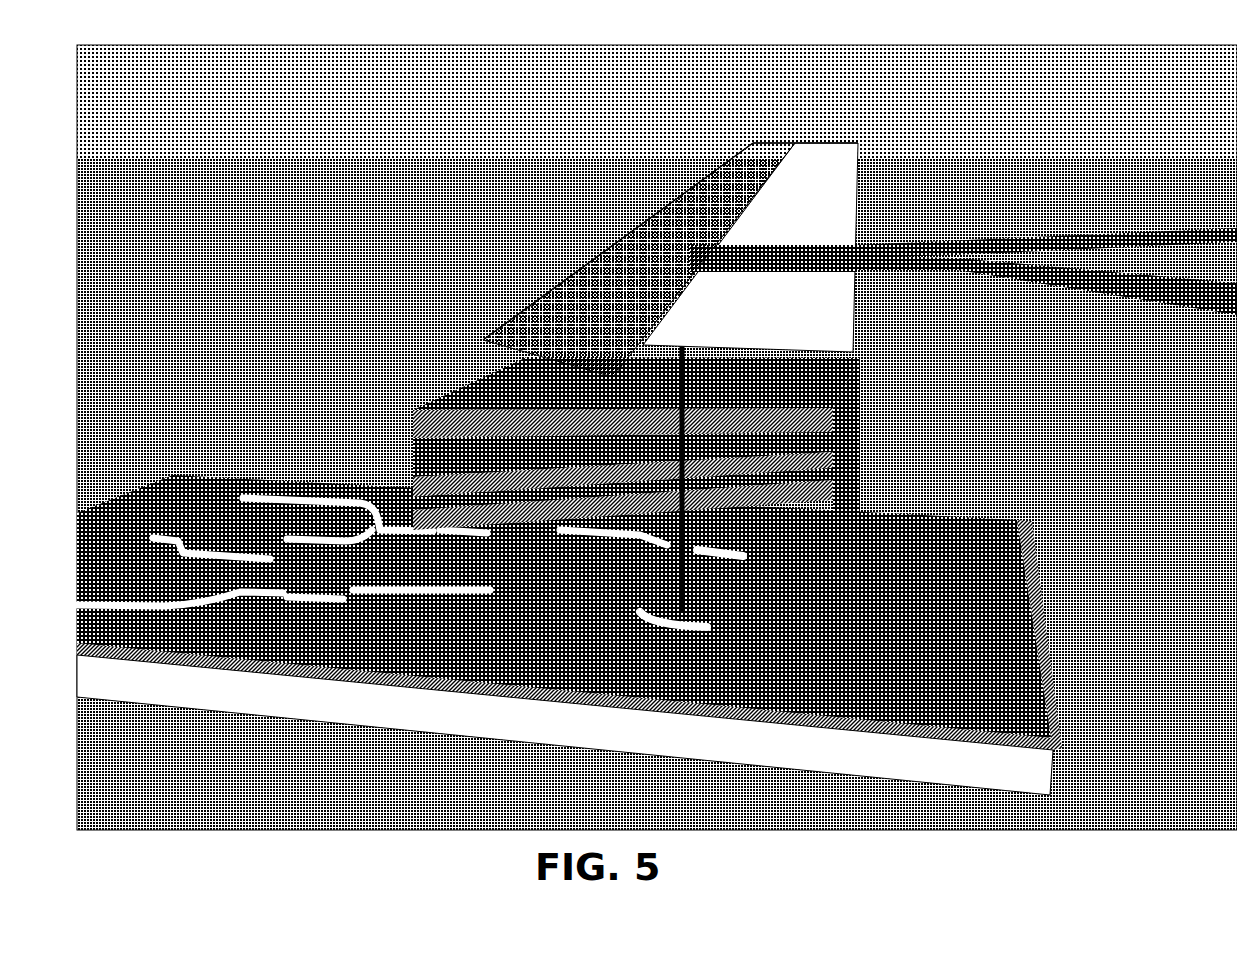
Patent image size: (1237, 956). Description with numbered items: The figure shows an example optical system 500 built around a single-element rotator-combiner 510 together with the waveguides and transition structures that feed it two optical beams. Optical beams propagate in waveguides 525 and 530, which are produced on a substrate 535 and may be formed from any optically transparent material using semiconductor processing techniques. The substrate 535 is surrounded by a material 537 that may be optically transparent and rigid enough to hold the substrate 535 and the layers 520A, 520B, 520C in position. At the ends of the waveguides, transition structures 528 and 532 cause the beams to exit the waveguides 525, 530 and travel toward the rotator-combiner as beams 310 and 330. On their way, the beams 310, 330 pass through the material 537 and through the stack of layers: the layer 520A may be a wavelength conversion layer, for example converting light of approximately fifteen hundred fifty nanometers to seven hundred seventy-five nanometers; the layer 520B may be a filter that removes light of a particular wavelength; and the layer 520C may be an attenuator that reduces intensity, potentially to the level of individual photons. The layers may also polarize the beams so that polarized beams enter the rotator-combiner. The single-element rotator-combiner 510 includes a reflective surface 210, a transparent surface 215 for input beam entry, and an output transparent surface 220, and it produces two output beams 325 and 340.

The optical system 500 is at (727, 33).
The material 537 is at (337, 196).
The single-element rotator-combiner 510 is at (787, 136).
The transparent surface 220 is at (830, 182).
The reflective surface 210 is at (660, 215).
The output beam 340 is at (966, 238).
The output beam 325 is at (946, 289).
The transparent surface 215 is at (502, 351).
The attenuator layer 520C is at (864, 378).
The filter layer 520B is at (864, 412).
The wavelength conversion layer 520A is at (864, 450).
The beam 330 is at (722, 539).
The transition structure 532 is at (729, 557).
The transition structure 528 is at (692, 626).
The beam 310 is at (670, 590).
The waveguide 525 is at (384, 598).
The waveguide 530 is at (484, 534).
The substrate 535 is at (1022, 772).